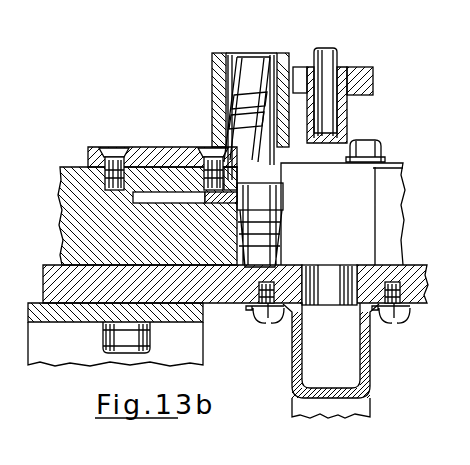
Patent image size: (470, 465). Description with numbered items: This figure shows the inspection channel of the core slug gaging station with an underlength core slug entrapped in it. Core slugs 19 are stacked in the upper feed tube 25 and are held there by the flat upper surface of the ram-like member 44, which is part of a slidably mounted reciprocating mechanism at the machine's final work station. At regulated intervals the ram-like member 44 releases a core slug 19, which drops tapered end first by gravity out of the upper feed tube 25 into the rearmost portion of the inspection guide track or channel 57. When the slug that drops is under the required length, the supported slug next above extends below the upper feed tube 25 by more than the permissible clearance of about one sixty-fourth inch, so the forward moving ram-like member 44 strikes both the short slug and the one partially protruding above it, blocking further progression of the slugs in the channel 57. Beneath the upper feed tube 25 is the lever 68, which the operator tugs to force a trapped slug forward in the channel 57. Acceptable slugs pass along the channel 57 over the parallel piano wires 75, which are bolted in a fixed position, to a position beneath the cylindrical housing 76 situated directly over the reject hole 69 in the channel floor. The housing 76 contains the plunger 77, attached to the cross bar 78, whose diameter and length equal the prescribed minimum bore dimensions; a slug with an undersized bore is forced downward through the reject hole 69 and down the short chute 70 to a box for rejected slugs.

The core slug 19 is at (247, 96).
The upper feed tube 25 is at (218, 62).
The ram-like member 44 is at (76, 181).
The inspection guide track or channel 57 is at (392, 186).
The lever 68 is at (204, 195).
The reject hole 69 is at (338, 293).
The chute 70 is at (366, 346).
The piano wire 75 is at (321, 164).
The cylindrical housing 76 is at (346, 118).
The plunger 77 is at (338, 58).
The cross bar 78 is at (374, 80).